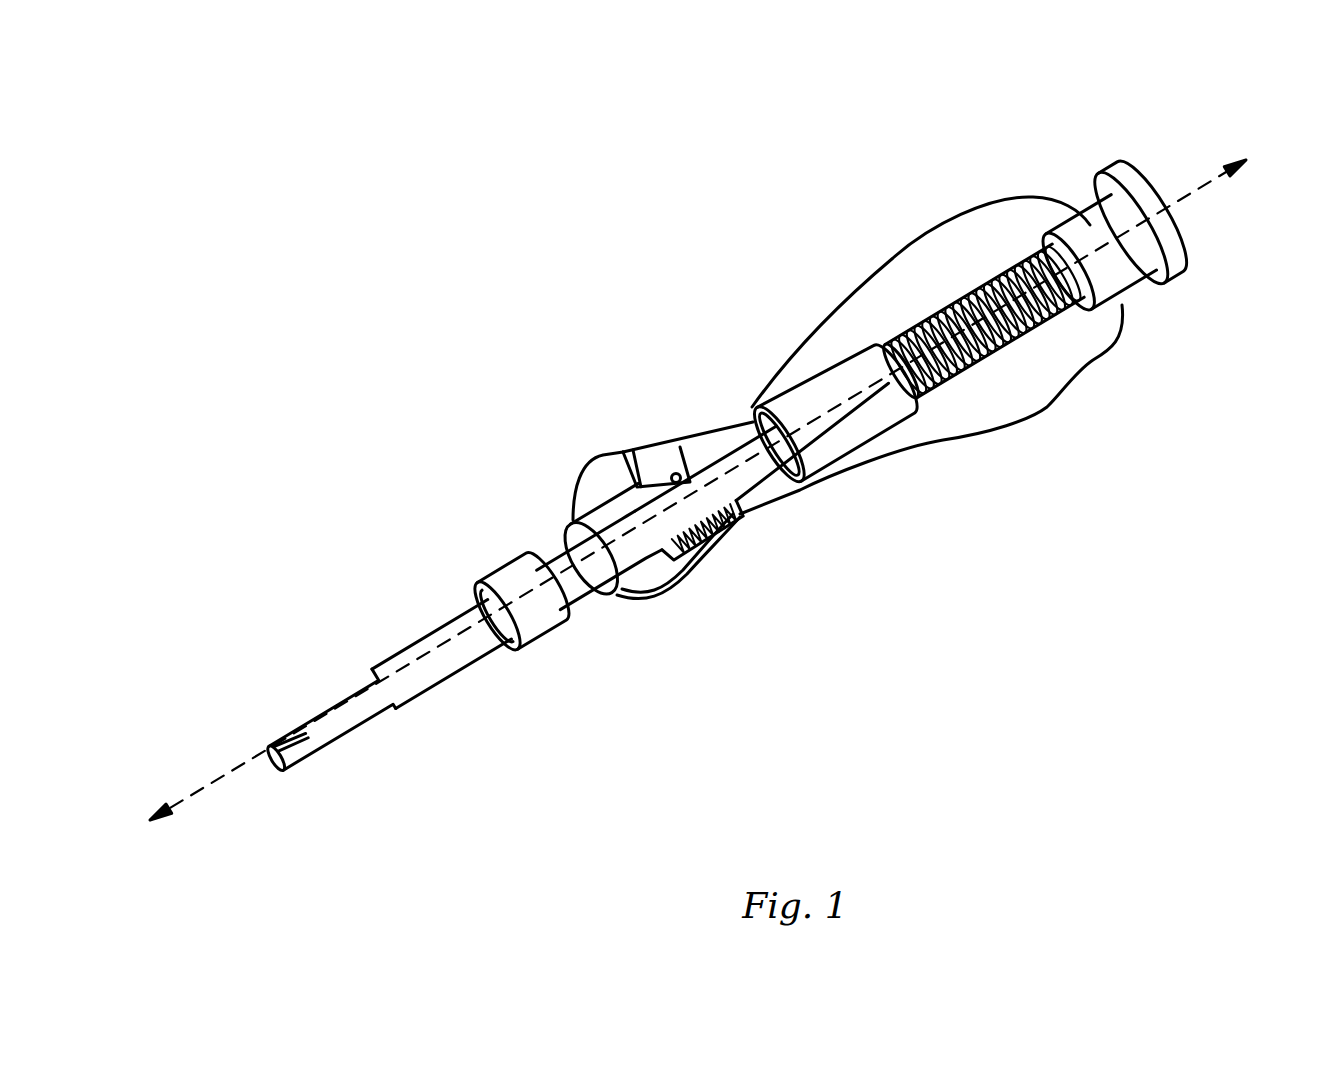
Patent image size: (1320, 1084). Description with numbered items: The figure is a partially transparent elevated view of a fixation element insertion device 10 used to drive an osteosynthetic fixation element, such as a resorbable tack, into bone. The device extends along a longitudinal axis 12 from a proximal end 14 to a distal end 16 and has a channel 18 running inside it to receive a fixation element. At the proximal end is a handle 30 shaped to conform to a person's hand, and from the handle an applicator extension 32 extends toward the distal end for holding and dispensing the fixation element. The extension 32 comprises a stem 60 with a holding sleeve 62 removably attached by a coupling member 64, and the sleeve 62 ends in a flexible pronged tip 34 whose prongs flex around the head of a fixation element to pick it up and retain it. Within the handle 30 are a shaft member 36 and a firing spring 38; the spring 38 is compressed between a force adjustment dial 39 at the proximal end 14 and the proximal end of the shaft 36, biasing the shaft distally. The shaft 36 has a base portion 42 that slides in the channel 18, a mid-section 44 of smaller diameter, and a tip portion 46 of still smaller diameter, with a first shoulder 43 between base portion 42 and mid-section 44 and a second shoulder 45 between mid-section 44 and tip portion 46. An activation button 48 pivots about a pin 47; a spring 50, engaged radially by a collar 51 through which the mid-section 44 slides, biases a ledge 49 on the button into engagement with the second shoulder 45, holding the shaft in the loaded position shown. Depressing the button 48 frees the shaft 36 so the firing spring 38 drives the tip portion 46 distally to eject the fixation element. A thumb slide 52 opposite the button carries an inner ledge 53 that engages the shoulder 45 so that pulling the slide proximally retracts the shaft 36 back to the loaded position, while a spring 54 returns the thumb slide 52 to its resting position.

The fixation element insertion device 10 is at (517, 225).
The longitudinal axis 12 is at (214, 776).
The proximal end 14 is at (1177, 307).
The distal end 16 is at (301, 761).
The channel 18 is at (262, 751).
The handle 30 is at (1050, 397).
The applicator extension 32 is at (449, 620).
The pronged tip 34 is at (308, 742).
The shaft member 36 is at (824, 366).
The firing spring 38 is at (978, 367).
The force adjustment dial 39 is at (1090, 200).
The base portion 42 is at (857, 427).
The first shoulder 43 is at (762, 420).
The mid-section 44 is at (767, 463).
The second shoulder 45 is at (700, 498).
The tip portion 46 is at (623, 548).
The pin 47 is at (683, 527).
The activation button 48 is at (620, 452).
The ledge 49 is at (687, 466).
The spring 50 is at (578, 510).
The collar 51 is at (566, 580).
The thumb slide 52 is at (662, 608).
The inner ledge 53 is at (677, 580).
The spring 54 is at (743, 517).
The stem 60 is at (557, 538).
The holding sleeve 62 is at (418, 677).
The coupling member 64 is at (538, 645).